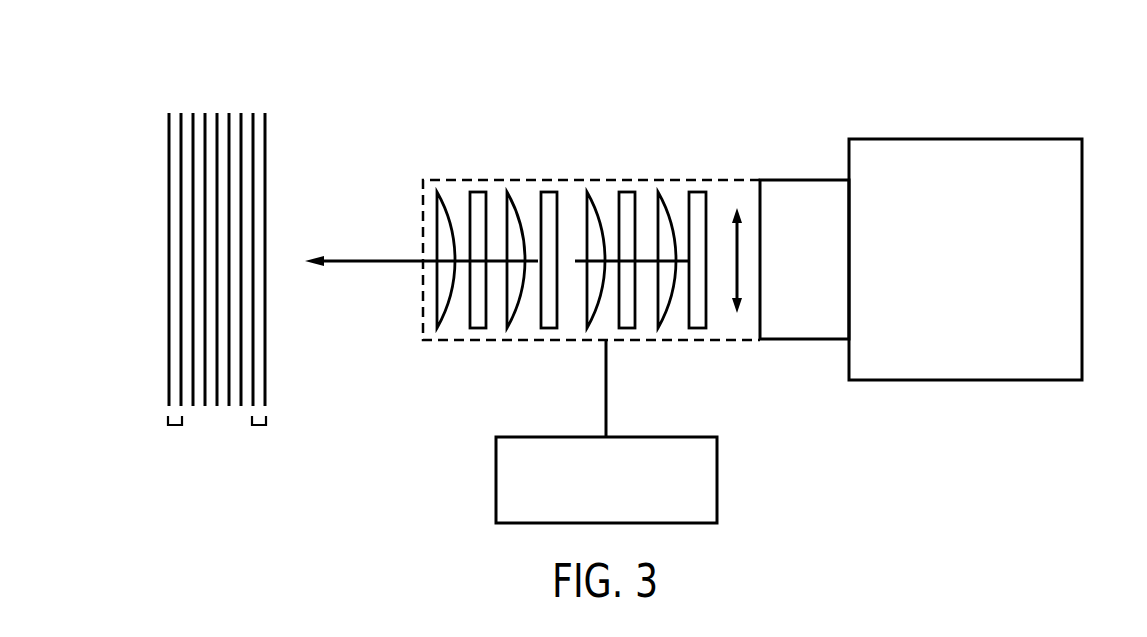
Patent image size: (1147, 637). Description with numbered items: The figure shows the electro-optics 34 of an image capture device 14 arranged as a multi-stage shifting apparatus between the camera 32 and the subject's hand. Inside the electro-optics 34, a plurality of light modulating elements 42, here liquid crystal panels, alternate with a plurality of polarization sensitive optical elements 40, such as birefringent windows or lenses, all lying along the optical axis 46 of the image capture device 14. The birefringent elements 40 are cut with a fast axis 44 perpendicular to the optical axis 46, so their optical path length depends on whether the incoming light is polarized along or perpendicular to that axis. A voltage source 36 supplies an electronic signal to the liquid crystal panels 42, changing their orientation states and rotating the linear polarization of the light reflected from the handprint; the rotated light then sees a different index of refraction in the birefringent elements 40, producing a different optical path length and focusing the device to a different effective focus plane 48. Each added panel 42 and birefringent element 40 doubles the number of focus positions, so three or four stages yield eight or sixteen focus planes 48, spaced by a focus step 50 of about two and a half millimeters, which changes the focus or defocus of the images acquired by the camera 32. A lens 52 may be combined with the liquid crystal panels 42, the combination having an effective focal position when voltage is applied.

The image capture device 14 is at (911, 40).
The camera 32 is at (1083, 258).
The electro-optics 34 is at (722, 157).
The voltage source 36 is at (718, 482).
The polarization sensitive optical element 40 is at (478, 329).
The light modulating element 42 is at (437, 329).
The fast axis 44 is at (738, 260).
The optical axis 46 is at (363, 264).
The focus planes 48 is at (253, 141).
The focus step 50 is at (175, 425).
The lens 52 is at (806, 340).